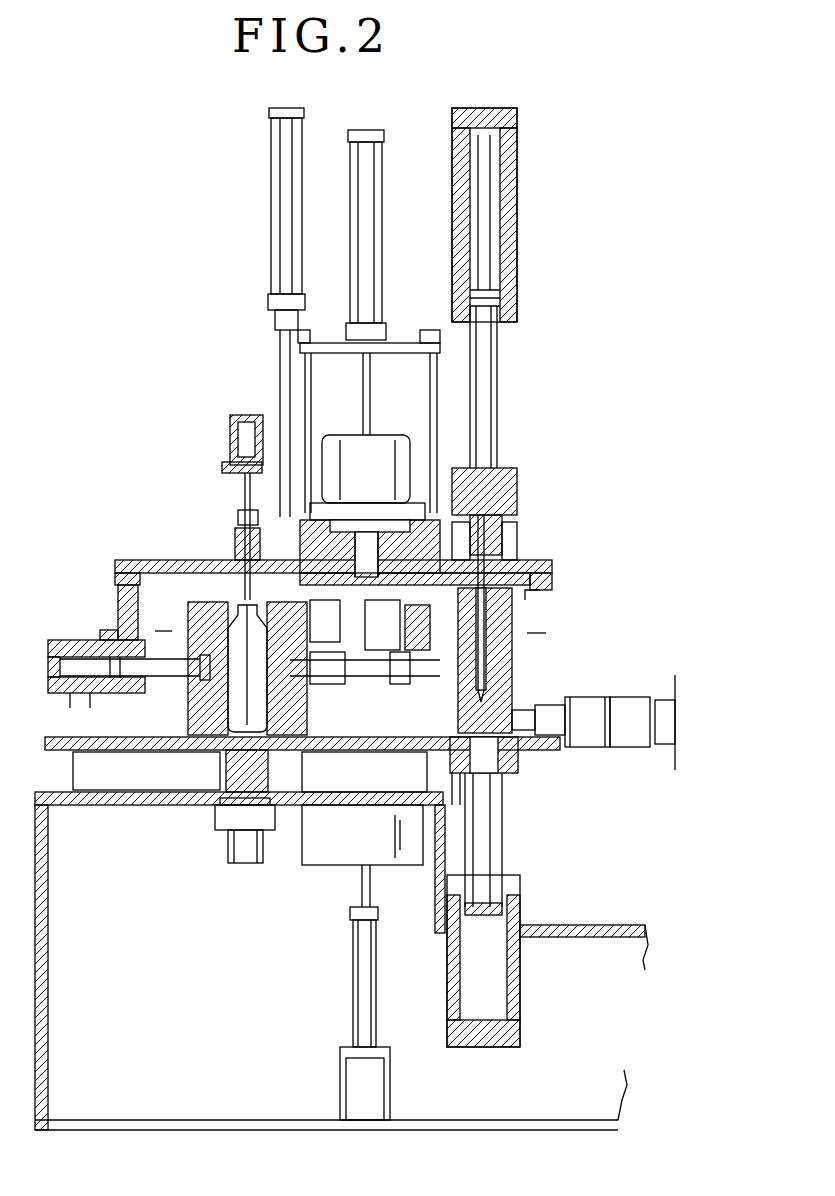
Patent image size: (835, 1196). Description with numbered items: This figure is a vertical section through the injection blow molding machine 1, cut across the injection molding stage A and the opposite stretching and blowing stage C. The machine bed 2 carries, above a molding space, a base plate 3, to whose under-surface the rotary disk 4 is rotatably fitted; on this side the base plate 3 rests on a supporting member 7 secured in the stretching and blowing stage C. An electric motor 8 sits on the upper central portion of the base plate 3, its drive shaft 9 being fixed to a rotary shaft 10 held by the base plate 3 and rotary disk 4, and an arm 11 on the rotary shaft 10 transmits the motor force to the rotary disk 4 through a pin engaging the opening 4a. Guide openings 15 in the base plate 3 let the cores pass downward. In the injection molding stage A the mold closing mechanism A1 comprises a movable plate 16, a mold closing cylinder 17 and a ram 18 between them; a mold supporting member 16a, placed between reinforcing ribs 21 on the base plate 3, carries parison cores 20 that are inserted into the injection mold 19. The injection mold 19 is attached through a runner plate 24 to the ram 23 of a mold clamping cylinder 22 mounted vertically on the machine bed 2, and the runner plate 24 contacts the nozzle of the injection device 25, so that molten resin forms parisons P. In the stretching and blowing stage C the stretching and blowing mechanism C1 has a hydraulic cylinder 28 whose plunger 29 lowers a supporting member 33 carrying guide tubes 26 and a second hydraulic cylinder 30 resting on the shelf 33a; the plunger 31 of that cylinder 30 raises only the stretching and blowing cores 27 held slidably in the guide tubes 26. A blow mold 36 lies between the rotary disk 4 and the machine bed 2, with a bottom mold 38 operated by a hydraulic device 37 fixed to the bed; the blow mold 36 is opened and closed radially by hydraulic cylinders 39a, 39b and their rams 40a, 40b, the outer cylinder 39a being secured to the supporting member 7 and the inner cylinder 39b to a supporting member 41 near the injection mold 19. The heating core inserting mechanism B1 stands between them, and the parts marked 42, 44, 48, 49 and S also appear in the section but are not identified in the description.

The molding machine 1 is at (128, 528).
The machine bed 2 is at (130, 798).
The base plate 3 is at (164, 560).
The rotary disk 4 is at (530, 595).
The opening 4a is at (422, 580).
The supporting member 7 is at (118, 605).
The electric motor 8 is at (390, 440).
The drive shaft 9 is at (364, 528).
The rotary shaft 10 is at (328, 623).
The arm 11 is at (397, 625).
The guide openings 15 is at (535, 556).
The movable plate 16 is at (502, 468).
The mold supporting member 16a is at (518, 535).
The mold closing cylinder 17 is at (515, 230).
The ram 18 is at (490, 340).
The injection mold 19 is at (512, 684).
The parison cores 20 is at (512, 655).
The reinforcing ribs 21 is at (508, 530).
The mold clamping cylinder 22 is at (512, 999).
The ram 23 is at (485, 840).
The runner plate 24 is at (518, 745).
The injection device 25 is at (630, 710).
The guide tubes 26 is at (238, 516).
The stretching and blowing cores 27 is at (235, 545).
The hydraulic cylinder 28 is at (280, 213).
The plunger 29 is at (280, 342).
The hydraulic cylinder 30 is at (240, 415).
The plunger 31 is at (244, 488).
The supporting member 33 is at (313, 500).
The shelf 33a is at (222, 465).
The blow mold 36 is at (210, 755).
The hydraulic device 37 is at (242, 855).
The bottom mold 38 is at (280, 828).
The hydraulic cylinder 39a is at (70, 648).
The hydraulic cylinder 39b is at (460, 785).
The ram 40a is at (150, 665).
The ram 40b is at (398, 690).
The supporting member 41 is at (410, 745).
The post 42 is at (308, 380).
The rod 44 is at (363, 390).
The cylinder 48 is at (362, 976).
The piston rod 49 is at (360, 884).
The injection molding stage A is at (537, 620).
The mold closing mechanism A1 is at (520, 210).
The heating core inserting mechanism B1 is at (388, 190).
The stretching and blowing mechanism C1 is at (270, 185).
The stretching and blowing stage C is at (164, 618).
The container S is at (225, 650).
The parisons P is at (470, 690).